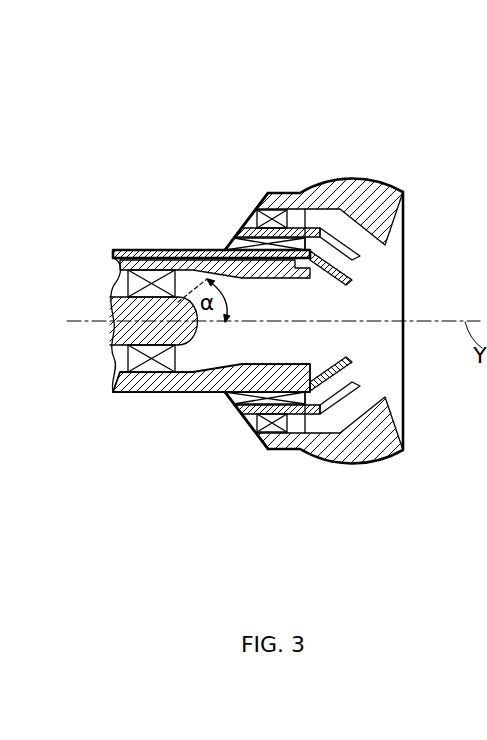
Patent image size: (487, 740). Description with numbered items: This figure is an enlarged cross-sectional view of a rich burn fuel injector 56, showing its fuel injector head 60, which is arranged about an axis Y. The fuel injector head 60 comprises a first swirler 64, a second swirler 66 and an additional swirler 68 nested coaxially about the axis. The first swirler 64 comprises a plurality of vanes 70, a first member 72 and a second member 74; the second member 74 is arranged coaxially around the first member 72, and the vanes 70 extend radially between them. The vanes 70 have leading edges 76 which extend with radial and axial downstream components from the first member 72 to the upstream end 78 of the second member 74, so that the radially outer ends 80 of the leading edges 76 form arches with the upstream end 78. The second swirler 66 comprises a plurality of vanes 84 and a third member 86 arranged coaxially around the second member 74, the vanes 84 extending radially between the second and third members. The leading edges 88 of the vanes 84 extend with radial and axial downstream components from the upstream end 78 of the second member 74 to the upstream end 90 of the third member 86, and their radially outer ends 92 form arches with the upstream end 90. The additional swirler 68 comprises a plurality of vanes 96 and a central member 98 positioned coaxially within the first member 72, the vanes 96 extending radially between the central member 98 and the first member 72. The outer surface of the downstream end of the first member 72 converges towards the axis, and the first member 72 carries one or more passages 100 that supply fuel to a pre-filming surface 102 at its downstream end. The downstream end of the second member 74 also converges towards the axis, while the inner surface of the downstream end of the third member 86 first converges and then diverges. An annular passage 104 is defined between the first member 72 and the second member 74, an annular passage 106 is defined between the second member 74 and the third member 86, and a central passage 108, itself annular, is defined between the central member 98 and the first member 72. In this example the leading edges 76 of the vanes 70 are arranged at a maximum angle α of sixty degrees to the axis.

The fuel injector 56 is at (424, 489).
The fuel injector head 60 is at (368, 463).
The first swirler 64 is at (235, 403).
The second swirler 66 is at (267, 432).
The additional swirler 68 is at (137, 393).
The vanes 70 is at (262, 215).
The first member 72 is at (122, 253).
The second member 74 is at (303, 235).
The leading edges 76 is at (227, 249).
The upstream end 78 is at (242, 227).
The radially outer ends 80 is at (238, 236).
The vanes 84 is at (285, 431).
The third member 86 is at (337, 183).
The leading edges 88 is at (250, 430).
The upstream end 90 is at (272, 450).
The radially outer ends 92 is at (266, 230).
The vanes 96 is at (172, 373).
The central member 98 is at (114, 351).
The passages 100 is at (170, 252).
The pre-filming surface 102 is at (330, 276).
The annular passage 104 is at (312, 405).
The annular passage 106 is at (340, 222).
The central passage 108 is at (208, 350).